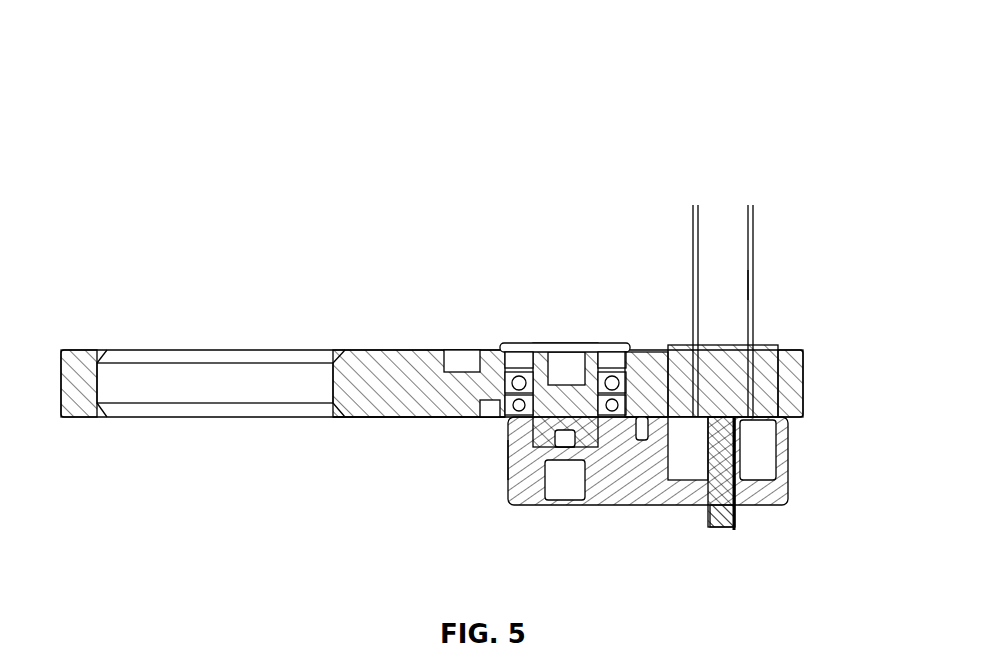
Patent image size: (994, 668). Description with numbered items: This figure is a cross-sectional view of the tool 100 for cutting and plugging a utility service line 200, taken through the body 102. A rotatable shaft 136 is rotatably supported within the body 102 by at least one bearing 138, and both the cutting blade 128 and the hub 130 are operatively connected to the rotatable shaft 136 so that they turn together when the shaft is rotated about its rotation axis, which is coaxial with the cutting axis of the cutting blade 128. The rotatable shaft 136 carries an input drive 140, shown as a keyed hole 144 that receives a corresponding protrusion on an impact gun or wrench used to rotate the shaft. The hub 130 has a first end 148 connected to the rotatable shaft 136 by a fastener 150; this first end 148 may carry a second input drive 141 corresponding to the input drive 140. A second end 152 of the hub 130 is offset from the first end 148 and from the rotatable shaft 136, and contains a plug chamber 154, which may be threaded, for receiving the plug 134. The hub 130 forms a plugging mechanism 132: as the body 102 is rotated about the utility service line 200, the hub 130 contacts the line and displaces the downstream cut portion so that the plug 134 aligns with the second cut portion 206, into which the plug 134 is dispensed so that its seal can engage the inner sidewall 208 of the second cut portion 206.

The tool 100 is at (565, 128).
The body 102 is at (362, 348).
The cutting blade 128 is at (420, 422).
The hub 130 is at (555, 509).
The plugging mechanism 132 is at (808, 513).
The plug 134 is at (740, 530).
The rotatable shaft 136 is at (525, 340).
The bearing 138 is at (523, 397).
The input drive 140 is at (592, 352).
The second input drive 141 is at (545, 495).
The keyed hole 144 is at (560, 360).
The first end 148 is at (522, 460).
The fastener 150 is at (568, 460).
The second end 152 is at (795, 465).
The plug chamber 154 is at (745, 440).
The utility service line 200 is at (800, 212).
The second cut portion 206 is at (695, 225).
The inner sidewall 208 is at (750, 285).